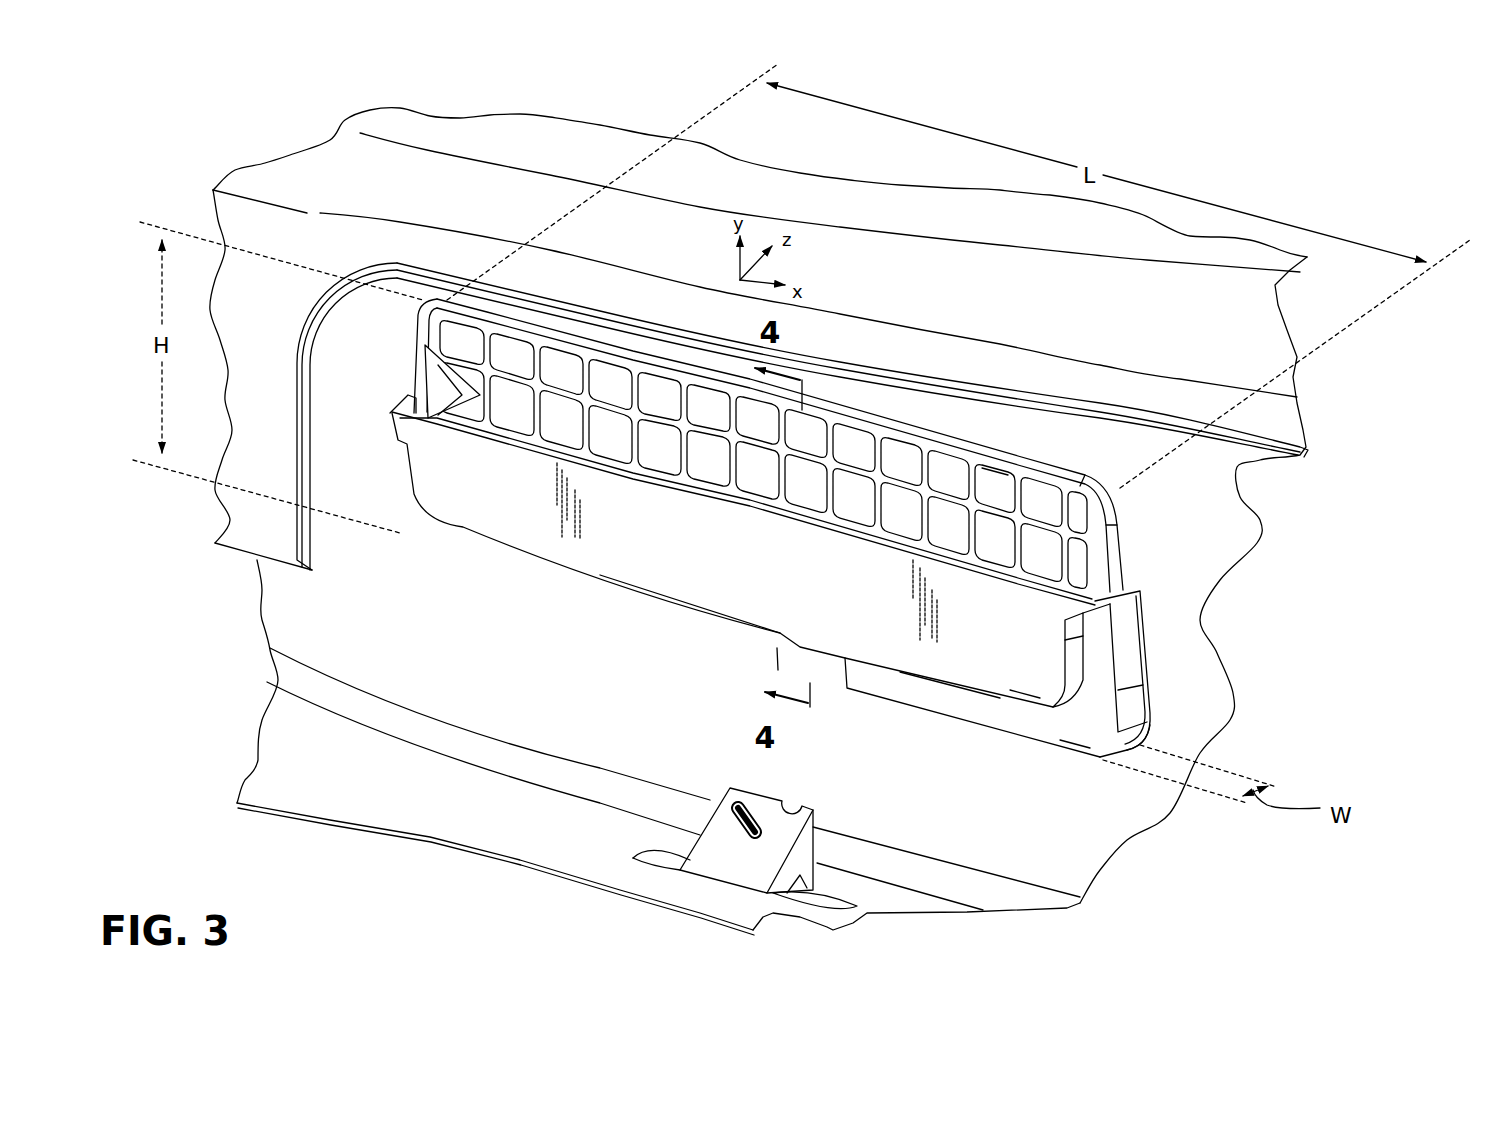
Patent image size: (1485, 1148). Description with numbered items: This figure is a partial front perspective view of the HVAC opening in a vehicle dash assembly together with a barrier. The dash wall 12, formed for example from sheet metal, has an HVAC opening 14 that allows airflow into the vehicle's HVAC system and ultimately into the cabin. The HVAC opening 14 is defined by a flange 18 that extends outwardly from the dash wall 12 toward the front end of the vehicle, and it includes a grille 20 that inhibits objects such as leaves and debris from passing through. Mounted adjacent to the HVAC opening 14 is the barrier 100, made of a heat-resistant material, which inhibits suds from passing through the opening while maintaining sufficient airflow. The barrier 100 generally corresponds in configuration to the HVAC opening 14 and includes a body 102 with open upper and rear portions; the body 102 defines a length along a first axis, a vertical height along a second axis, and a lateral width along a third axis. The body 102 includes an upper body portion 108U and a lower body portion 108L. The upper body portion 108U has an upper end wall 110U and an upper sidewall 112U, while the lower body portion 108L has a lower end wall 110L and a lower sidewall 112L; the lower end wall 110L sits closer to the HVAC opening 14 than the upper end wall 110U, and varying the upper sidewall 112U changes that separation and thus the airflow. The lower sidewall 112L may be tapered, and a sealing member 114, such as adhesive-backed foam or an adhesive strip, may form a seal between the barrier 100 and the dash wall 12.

The dash wall 12 is at (1152, 519).
The HVAC opening 14 is at (850, 503).
The flange 18 is at (1037, 470).
The grille 20 is at (972, 500).
The barrier 100 is at (620, 625).
The body 102 is at (527, 577).
The upper body portion 108U is at (1033, 678).
The lower body portion 108L is at (1083, 720).
The upper end wall 110U is at (968, 640).
The lower end wall 110L is at (975, 713).
The upper sidewall 112U is at (1077, 648).
The lower sidewall 112L is at (1130, 690).
The sealing member 114 is at (1150, 727).